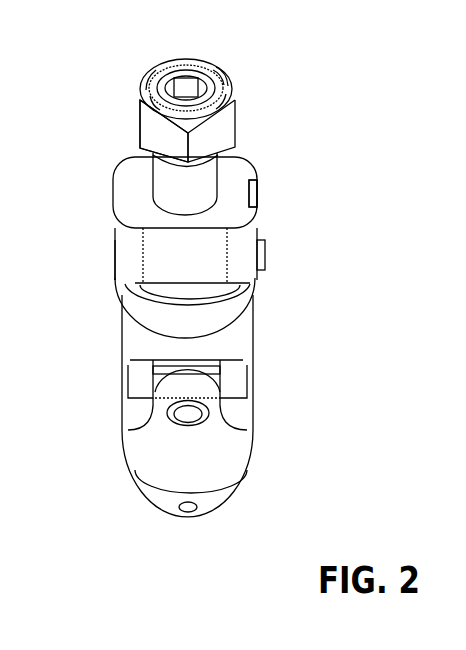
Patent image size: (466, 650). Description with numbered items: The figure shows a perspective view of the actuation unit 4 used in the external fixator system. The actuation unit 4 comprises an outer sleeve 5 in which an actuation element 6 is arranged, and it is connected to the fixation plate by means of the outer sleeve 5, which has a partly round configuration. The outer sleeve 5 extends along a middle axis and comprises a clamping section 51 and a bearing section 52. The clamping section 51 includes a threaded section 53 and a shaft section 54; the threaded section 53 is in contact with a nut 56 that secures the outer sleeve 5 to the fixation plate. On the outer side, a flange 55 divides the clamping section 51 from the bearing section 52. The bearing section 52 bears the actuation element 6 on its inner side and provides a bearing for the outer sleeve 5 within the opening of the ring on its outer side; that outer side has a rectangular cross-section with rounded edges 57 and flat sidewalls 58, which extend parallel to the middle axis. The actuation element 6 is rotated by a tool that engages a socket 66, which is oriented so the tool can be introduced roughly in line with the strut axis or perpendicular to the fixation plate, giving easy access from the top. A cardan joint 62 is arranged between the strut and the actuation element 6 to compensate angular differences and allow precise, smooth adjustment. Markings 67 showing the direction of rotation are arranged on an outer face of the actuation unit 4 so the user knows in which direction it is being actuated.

The actuation unit 4 is at (227, 130).
The outer sleeve 5 is at (240, 176).
The actuation element 6 is at (148, 132).
The clamping section 51 is at (163, 90).
The bearing section 52 is at (128, 242).
The threaded section 53 is at (163, 82).
The shaft section 54 is at (167, 176).
The flange 55 is at (173, 290).
The nut 56 is at (234, 108).
The rounded edges 57 is at (125, 251).
The flat sidewalls 58 is at (200, 253).
The cardan joint 62 is at (220, 458).
The socket 66 is at (188, 85).
The markings 67 is at (222, 80).